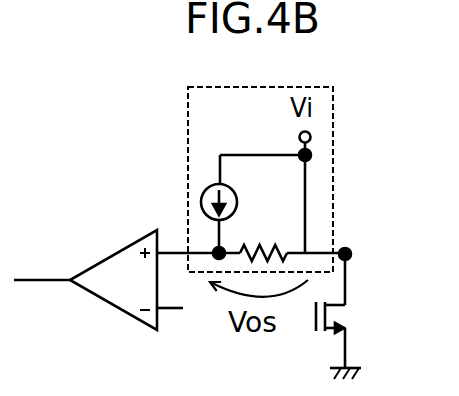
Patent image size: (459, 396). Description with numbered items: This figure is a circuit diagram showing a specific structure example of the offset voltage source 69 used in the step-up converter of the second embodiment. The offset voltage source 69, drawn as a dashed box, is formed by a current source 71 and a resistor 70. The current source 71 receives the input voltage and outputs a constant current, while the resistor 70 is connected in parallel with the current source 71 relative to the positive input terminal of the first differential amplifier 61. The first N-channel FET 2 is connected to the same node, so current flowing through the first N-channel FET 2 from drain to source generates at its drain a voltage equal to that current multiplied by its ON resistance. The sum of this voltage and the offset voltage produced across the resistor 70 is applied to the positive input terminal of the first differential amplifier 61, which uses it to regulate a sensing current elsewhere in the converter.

The first differential amplifier 61 is at (115, 252).
The offset voltage source 69 is at (333, 115).
The resistor 70 is at (257, 247).
The current source 71 is at (202, 198).
The first N-channel FET 2 is at (340, 308).